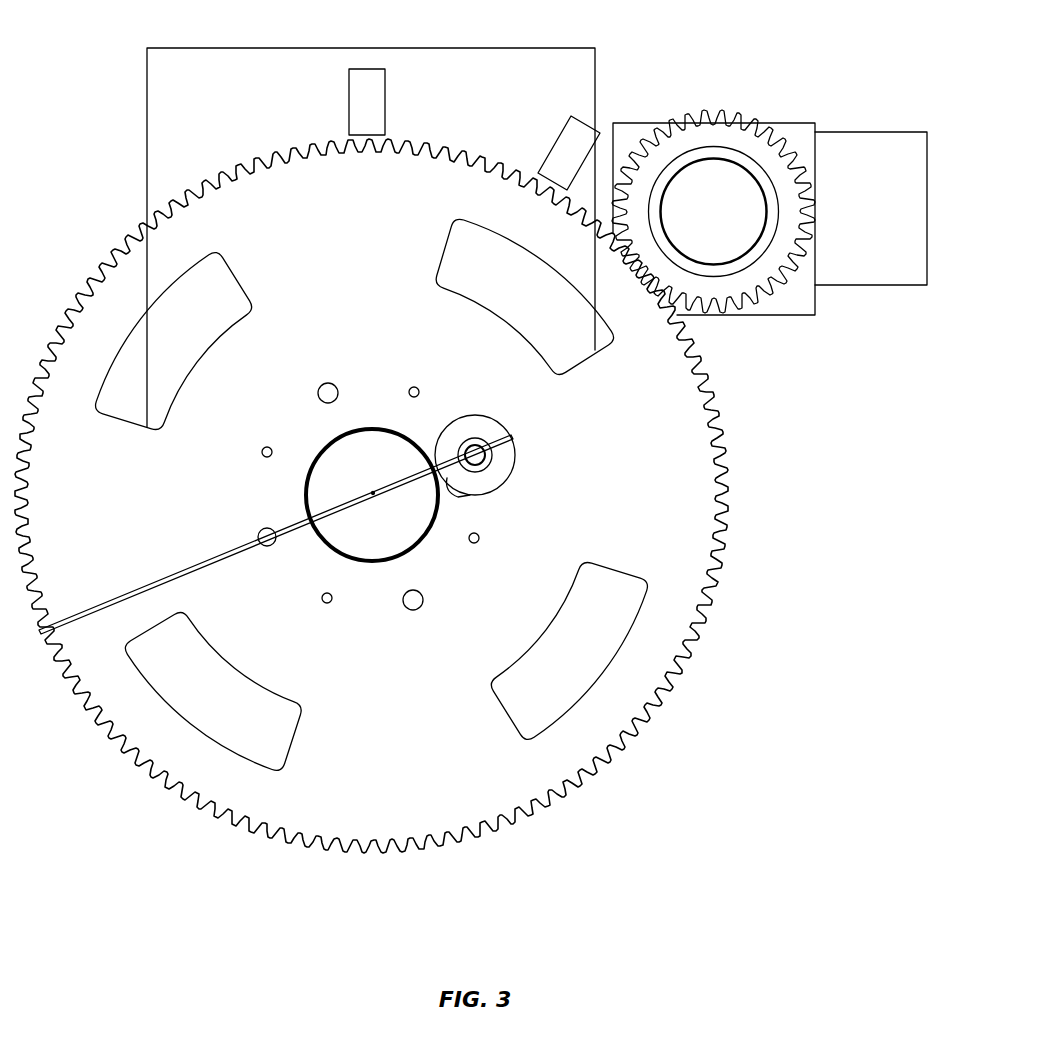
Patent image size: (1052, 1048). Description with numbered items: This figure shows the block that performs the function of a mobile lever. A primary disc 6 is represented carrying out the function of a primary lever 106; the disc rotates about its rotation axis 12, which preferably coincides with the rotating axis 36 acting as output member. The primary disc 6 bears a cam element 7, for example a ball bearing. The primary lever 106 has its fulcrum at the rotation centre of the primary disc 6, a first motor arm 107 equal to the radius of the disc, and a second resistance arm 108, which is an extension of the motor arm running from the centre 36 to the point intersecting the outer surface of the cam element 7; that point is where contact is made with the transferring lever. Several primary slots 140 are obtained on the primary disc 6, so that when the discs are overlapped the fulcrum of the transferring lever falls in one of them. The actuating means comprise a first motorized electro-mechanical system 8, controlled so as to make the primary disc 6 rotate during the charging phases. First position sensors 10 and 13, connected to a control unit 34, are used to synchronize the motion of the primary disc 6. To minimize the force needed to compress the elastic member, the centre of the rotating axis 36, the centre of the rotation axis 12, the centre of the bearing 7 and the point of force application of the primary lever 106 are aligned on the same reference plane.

The primary disc 6 is at (643, 738).
The cam element 7 is at (504, 417).
The first motorized electro-mechanical system 8 is at (817, 125).
The first position sensor 10 is at (349, 112).
The rotation axis of the primary disc 12 is at (319, 455).
The first position sensor 13 is at (598, 112).
The control unit 34 is at (597, 63).
The rotating axis 36 is at (373, 490).
The primary lever 106 is at (301, 528).
The first motor arm 107 is at (178, 574).
The second resistance arm 108 is at (493, 496).
The primary slots 140 is at (465, 278).